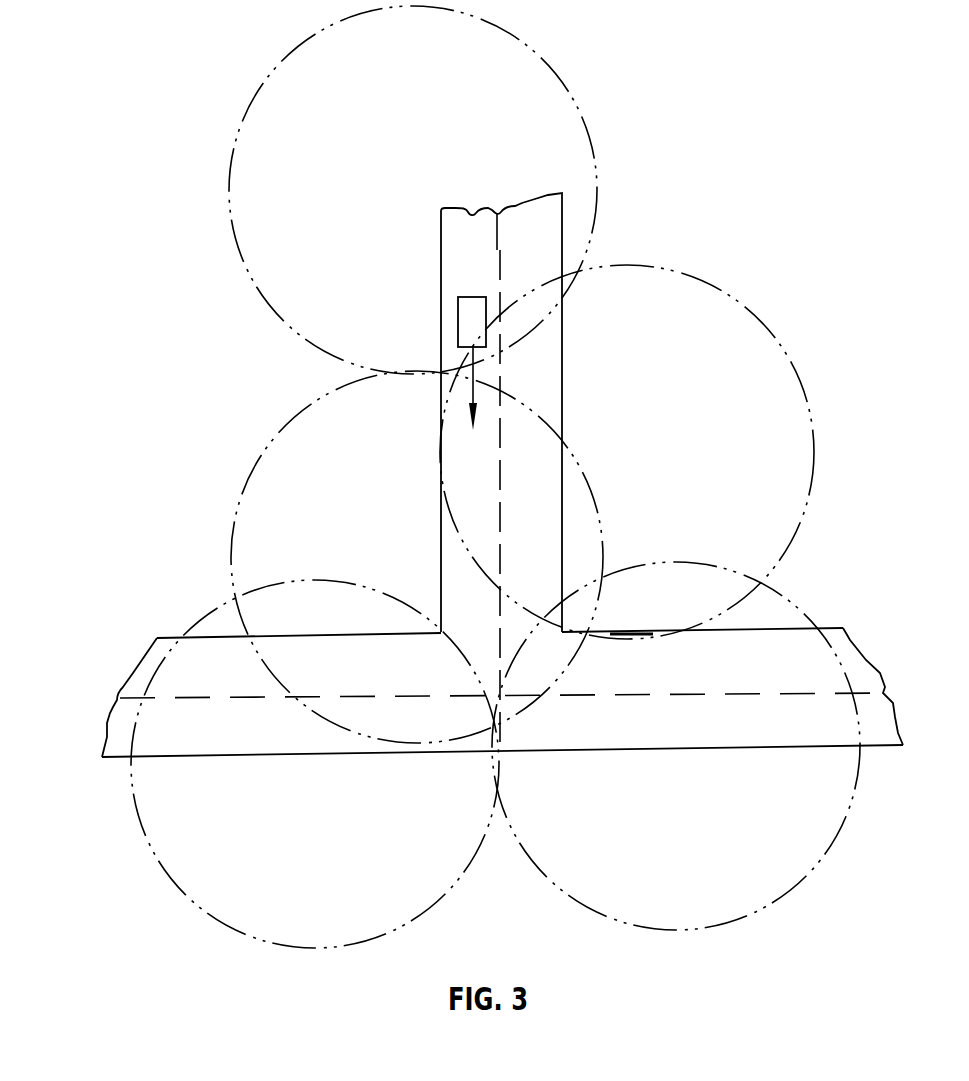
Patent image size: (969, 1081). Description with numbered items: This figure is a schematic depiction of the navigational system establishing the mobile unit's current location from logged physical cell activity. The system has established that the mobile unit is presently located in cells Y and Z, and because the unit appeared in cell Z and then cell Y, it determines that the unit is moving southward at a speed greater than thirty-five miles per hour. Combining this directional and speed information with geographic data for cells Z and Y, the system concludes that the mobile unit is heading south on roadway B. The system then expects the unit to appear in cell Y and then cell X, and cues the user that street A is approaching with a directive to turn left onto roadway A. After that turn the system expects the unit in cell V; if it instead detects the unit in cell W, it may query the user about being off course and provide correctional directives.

The street A is at (172, 730).
The roadway B is at (553, 223).
The cell V is at (790, 890).
The cell W is at (218, 923).
The cell X is at (245, 490).
The cell Y is at (812, 417).
The cell Z is at (247, 108).